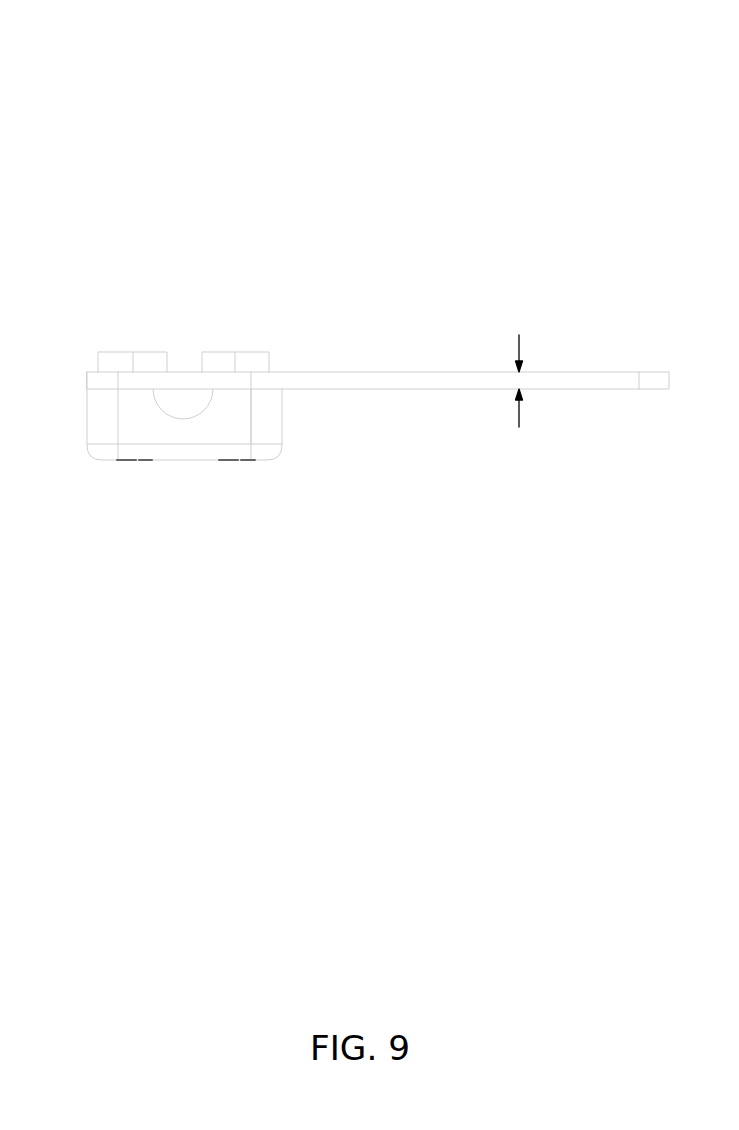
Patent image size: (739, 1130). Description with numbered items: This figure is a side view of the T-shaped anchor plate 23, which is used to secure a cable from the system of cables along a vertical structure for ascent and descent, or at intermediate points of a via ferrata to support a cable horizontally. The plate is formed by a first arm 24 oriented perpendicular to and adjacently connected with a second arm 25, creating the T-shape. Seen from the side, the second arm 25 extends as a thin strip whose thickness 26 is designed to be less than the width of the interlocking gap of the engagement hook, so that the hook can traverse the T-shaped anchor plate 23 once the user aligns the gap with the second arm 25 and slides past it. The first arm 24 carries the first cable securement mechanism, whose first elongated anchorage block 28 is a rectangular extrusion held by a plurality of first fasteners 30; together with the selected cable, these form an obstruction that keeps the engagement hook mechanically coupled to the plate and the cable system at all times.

The T-shaped anchor plate 23 is at (508, 117).
The first arm 24 is at (92, 382).
The second arm 25 is at (624, 373).
The thickness 26 is at (516, 348).
The first elongated anchorage block 28 is at (272, 433).
The plurality of first fasteners 30 is at (128, 355).